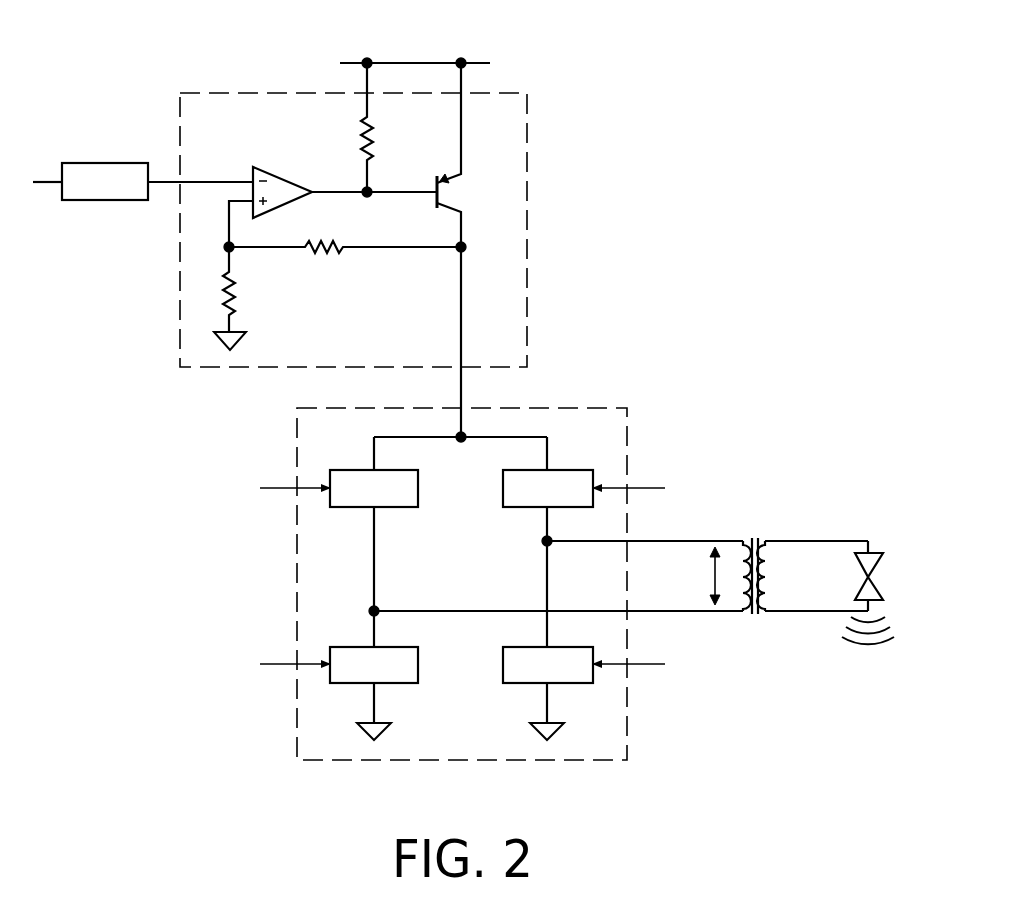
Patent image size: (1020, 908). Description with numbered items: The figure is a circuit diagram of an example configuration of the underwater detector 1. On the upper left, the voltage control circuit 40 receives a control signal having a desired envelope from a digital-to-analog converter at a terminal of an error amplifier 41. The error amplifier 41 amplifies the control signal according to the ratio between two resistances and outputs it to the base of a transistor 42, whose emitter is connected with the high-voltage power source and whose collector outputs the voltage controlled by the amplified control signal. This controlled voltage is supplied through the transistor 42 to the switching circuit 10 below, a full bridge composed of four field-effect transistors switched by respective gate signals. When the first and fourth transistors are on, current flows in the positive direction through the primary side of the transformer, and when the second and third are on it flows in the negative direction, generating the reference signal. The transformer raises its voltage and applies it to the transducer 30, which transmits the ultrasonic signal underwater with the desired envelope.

The underwater detector 1 is at (750, 270).
The switching circuit 10 is at (613, 432).
The transducer 30 is at (866, 522).
The voltage control circuit 40 is at (515, 128).
The error amplifier 41 is at (283, 186).
The transistor 42 is at (469, 155).